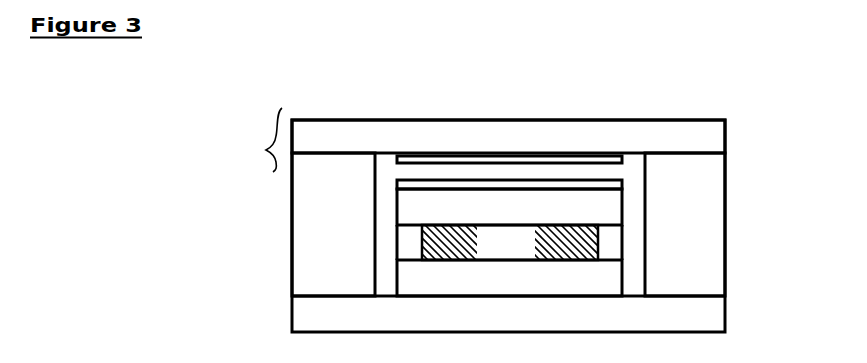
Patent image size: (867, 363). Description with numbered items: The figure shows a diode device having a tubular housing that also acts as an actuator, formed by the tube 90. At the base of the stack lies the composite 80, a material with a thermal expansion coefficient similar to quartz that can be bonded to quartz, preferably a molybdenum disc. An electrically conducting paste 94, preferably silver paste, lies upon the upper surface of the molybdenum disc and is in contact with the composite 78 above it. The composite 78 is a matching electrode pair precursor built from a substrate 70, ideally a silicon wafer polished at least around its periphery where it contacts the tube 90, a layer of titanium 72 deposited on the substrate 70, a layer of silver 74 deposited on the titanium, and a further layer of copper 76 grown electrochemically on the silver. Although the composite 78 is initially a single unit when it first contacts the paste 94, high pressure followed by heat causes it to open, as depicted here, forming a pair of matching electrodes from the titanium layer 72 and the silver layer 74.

The substrate 70 is at (508, 136).
The layer of titanium 72 is at (591, 159).
The layer of silver 74 is at (536, 185).
The layer of copper 76 is at (509, 207).
The composite 78 is at (241, 140).
The composite 80 is at (509, 260).
The tube 90 is at (508, 224).
The electrically conducting paste 94 is at (506, 242).